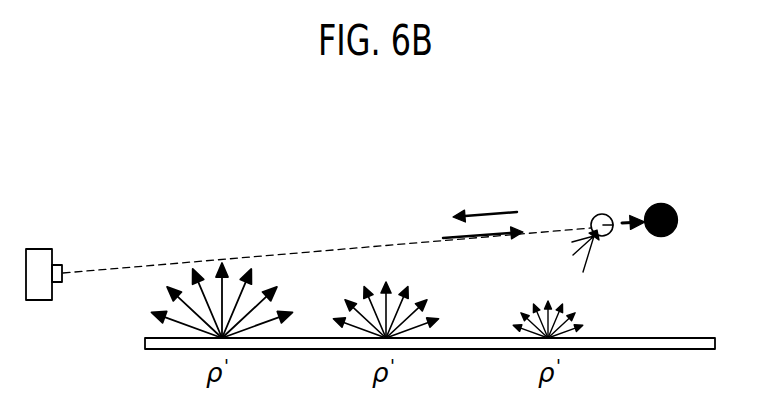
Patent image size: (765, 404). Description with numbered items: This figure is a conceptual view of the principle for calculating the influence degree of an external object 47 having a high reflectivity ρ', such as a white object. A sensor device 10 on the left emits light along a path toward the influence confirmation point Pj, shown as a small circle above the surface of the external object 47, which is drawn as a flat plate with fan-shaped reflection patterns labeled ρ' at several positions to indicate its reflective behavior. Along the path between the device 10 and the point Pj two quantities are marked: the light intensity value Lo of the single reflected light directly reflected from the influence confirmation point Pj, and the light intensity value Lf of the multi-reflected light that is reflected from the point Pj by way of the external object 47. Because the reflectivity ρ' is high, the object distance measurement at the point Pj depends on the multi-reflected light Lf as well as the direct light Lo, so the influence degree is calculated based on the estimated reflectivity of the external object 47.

The imaging device 10 is at (39, 258).
The external object 47 is at (703, 343).
The influence confirmation point Pj is at (595, 218).
The light intensity value of the multi-reflected light Lf is at (487, 197).
The light intensity value of the single reflected light Lo is at (472, 222).